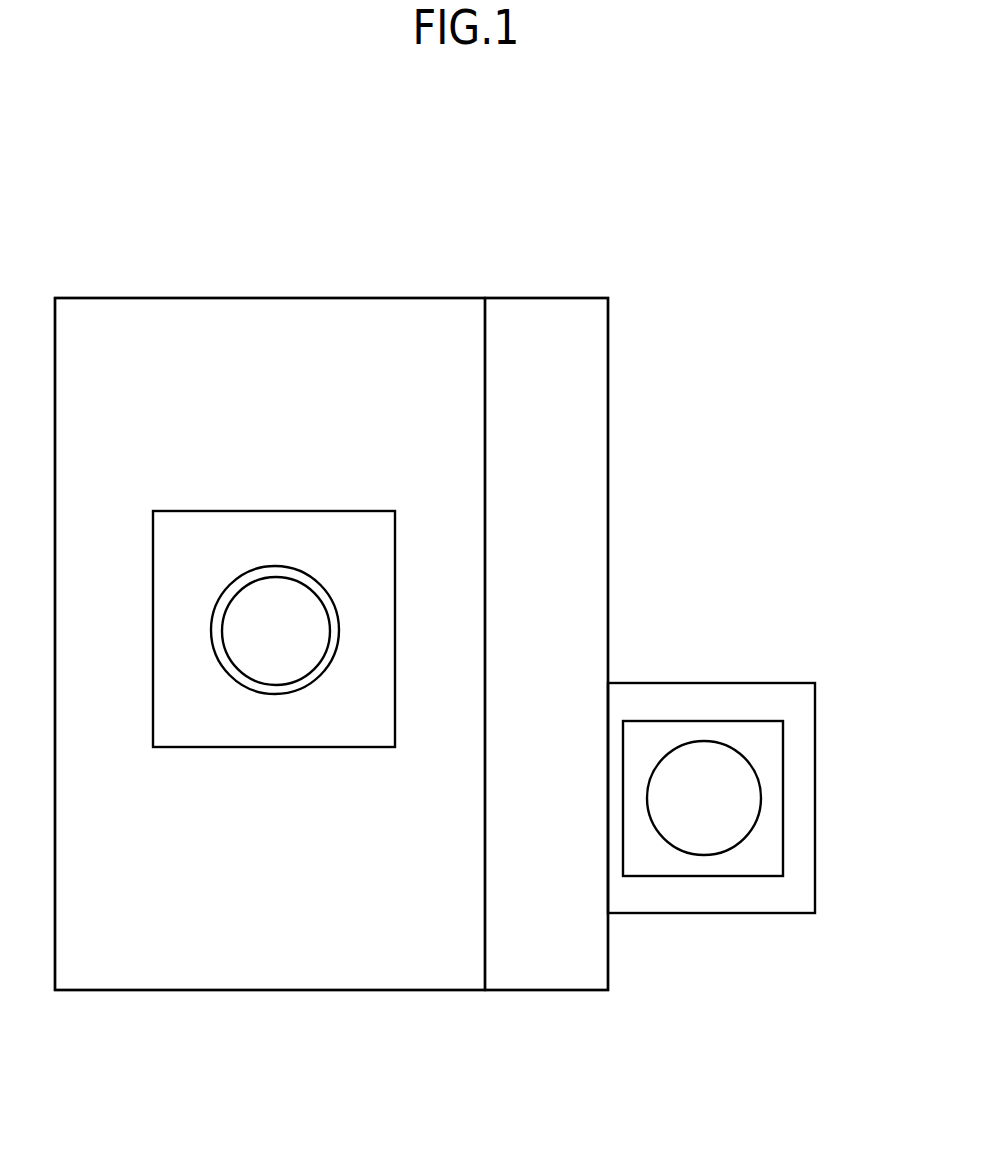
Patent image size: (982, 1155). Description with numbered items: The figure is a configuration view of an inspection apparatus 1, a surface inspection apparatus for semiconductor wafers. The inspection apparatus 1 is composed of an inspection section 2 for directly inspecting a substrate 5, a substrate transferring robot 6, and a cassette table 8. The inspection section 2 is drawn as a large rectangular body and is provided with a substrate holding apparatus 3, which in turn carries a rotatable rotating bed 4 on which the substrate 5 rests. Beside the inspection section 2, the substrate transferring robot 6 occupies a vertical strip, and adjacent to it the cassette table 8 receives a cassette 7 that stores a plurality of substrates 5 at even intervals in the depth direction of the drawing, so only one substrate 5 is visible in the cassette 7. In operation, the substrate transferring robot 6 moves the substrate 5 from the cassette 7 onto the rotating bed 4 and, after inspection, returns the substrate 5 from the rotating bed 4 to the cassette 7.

The inspection apparatus 1 is at (474, 199).
The inspection section 2 is at (265, 297).
The substrate holding apparatus 3 is at (303, 511).
The rotating bed 4 is at (247, 566).
The substrate 5 is at (278, 645).
The substrate transferring robot 6 is at (547, 297).
The cassette 7 is at (744, 720).
The cassette table 8 is at (815, 800).